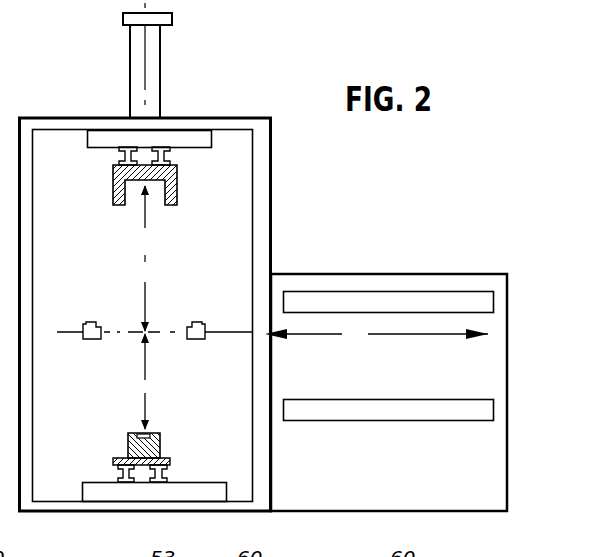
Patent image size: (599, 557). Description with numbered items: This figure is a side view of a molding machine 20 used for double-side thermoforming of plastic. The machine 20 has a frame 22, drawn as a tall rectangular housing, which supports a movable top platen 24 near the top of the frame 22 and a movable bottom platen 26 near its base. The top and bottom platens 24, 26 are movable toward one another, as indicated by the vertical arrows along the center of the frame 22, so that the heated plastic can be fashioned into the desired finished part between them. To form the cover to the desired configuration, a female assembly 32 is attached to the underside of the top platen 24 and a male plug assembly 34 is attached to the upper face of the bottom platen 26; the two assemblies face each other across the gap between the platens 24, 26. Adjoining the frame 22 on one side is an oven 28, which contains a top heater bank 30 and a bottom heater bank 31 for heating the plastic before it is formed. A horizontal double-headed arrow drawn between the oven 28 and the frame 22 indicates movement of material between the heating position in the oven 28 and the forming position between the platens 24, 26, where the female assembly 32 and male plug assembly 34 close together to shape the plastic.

The molding machine 20 is at (289, 56).
The frame 22 is at (272, 216).
The top platen 24 is at (200, 148).
The bottom platen 26 is at (187, 482).
The oven 28 is at (383, 273).
The top heater bank 30 is at (389, 318).
The bottom heater bank 31 is at (360, 421).
The female assembly 32 is at (177, 212).
The male plug assembly 34 is at (199, 404).